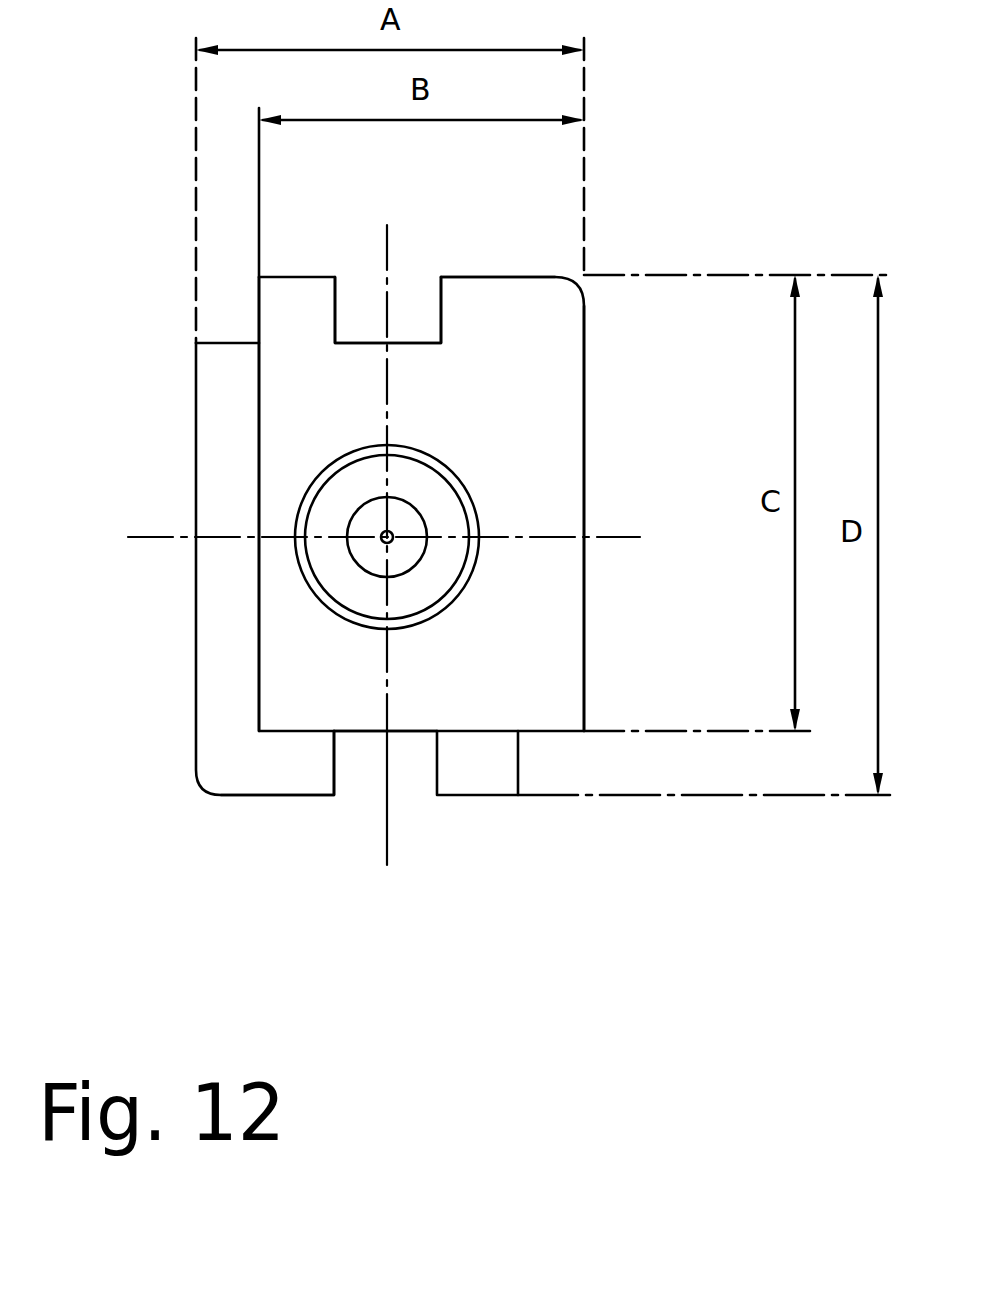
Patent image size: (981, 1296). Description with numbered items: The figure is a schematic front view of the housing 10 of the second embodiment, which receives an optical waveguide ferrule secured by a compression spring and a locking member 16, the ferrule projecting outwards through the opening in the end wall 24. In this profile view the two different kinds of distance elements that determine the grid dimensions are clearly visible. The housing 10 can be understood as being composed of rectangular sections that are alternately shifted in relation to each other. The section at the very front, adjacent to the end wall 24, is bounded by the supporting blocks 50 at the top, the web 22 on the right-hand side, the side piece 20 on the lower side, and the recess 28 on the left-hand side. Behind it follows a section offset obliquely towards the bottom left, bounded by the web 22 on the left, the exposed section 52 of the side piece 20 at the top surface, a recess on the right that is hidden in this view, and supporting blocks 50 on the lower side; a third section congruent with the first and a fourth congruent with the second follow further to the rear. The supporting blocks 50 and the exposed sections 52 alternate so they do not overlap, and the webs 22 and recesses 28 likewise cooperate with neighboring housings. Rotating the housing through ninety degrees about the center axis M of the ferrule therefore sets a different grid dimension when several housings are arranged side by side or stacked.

The housing 10 is at (686, 183).
The locking member 16 is at (407, 553).
The side piece 20 is at (407, 733).
The web 22 is at (193, 613).
The end wall 24 is at (540, 410).
The recess 28 is at (247, 493).
The supporting block 50 is at (297, 277).
The exposed section 52 is at (226, 340).
The center axis M is at (387, 537).